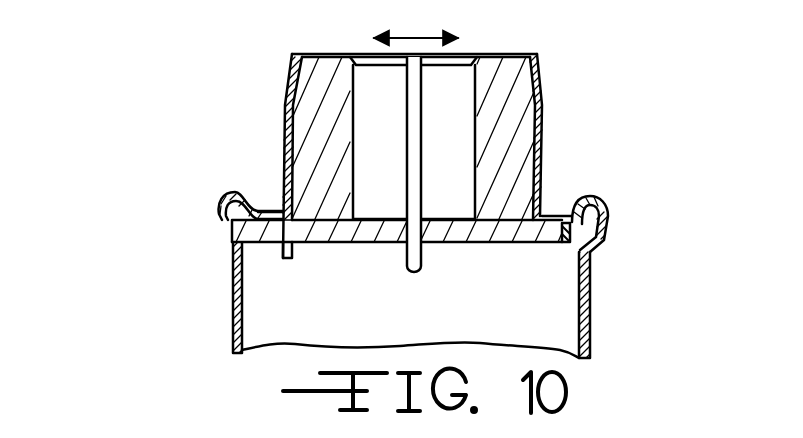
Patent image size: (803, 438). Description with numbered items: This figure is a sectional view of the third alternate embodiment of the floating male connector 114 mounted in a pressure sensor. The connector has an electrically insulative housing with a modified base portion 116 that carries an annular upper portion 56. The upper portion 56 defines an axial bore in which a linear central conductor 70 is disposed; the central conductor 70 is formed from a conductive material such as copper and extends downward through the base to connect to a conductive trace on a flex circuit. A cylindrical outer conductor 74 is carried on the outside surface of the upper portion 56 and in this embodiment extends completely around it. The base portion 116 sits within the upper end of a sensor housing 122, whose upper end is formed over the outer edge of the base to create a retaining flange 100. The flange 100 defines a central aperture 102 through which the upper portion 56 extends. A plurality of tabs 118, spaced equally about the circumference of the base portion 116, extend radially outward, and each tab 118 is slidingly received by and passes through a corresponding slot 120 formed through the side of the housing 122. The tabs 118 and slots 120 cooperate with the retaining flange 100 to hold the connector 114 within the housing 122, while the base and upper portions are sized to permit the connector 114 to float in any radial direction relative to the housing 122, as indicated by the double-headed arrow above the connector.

The annular upper portion 56 is at (497, 73).
The linear central conductor 70 is at (404, 272).
The cylindrical outer conductor 74 is at (541, 136).
The retaining flange 100 is at (563, 213).
The central aperture 102 is at (265, 196).
The male connector 114 is at (644, 101).
The housing base portion 116 is at (487, 230).
The tabs 118 is at (253, 242).
The slot 120 is at (221, 232).
The sensor housing 122 is at (590, 320).